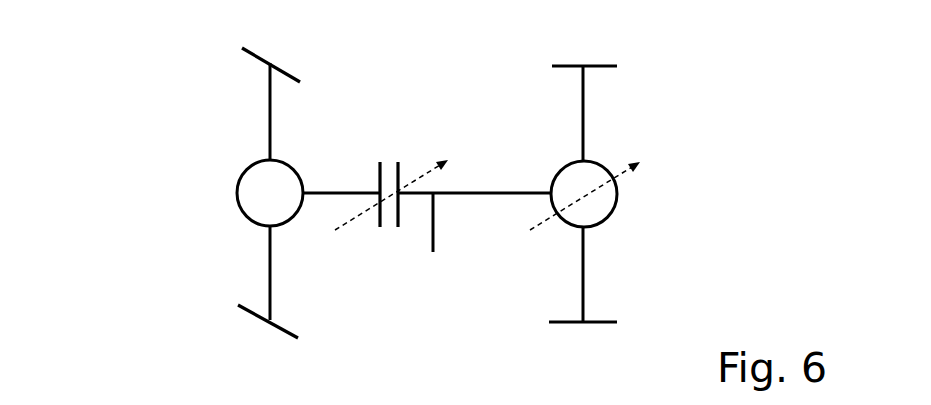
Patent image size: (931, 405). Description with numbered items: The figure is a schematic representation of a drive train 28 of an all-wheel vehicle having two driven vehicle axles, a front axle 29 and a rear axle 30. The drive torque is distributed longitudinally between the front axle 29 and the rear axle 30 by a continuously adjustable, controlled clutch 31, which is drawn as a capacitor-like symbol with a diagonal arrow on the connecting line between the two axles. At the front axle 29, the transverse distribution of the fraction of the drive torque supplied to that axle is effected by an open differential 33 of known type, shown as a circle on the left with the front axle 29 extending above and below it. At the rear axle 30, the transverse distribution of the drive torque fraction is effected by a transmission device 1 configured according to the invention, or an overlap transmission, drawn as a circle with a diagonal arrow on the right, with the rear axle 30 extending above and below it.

The drive train 28 is at (170, 132).
The front axle 29 is at (262, 97).
The open differential 33 is at (229, 201).
The continuously adjustable clutch 31 is at (413, 166).
The rear axle 30 is at (601, 120).
The transmission device 1 is at (624, 211).